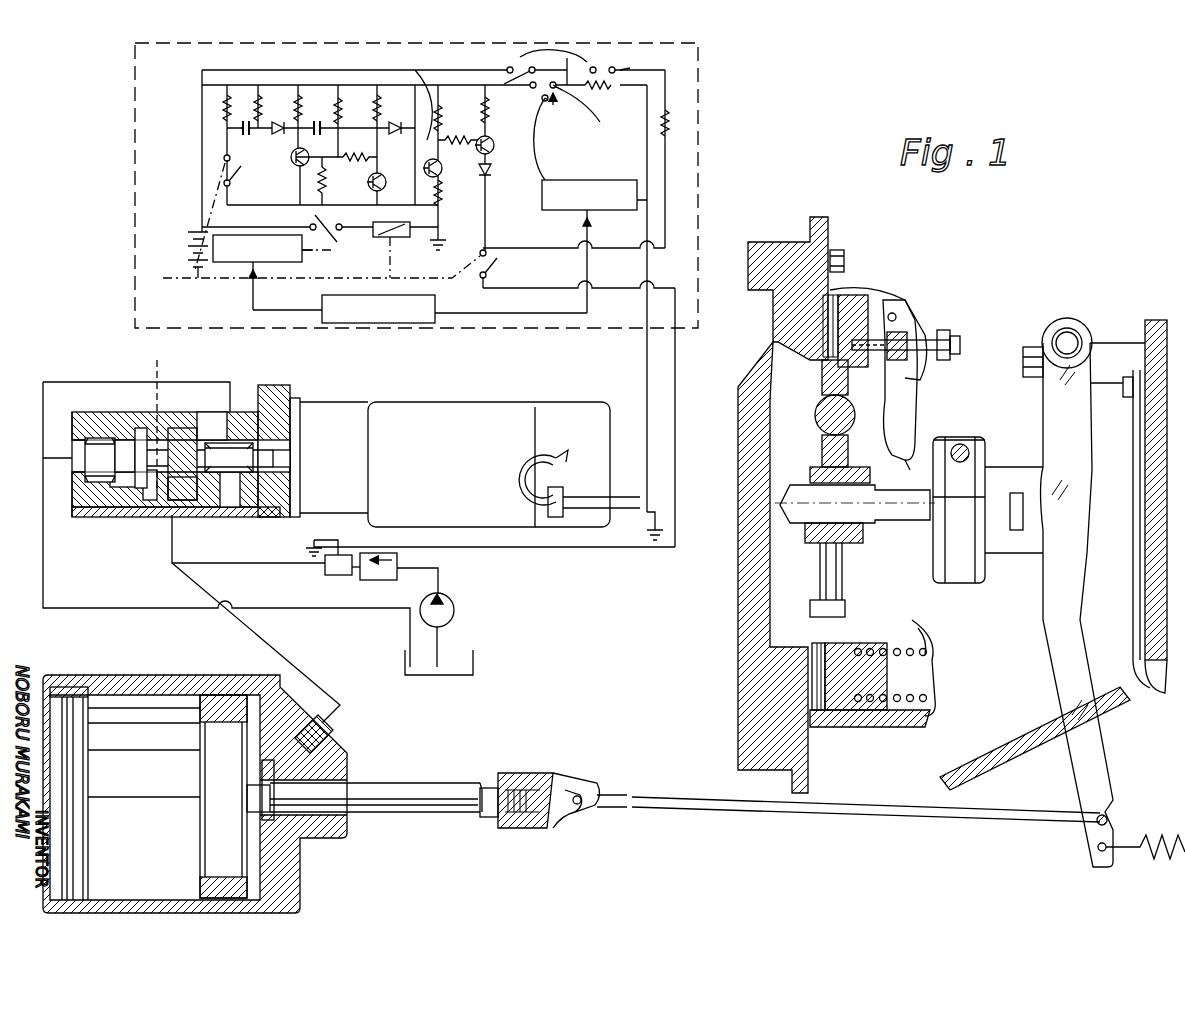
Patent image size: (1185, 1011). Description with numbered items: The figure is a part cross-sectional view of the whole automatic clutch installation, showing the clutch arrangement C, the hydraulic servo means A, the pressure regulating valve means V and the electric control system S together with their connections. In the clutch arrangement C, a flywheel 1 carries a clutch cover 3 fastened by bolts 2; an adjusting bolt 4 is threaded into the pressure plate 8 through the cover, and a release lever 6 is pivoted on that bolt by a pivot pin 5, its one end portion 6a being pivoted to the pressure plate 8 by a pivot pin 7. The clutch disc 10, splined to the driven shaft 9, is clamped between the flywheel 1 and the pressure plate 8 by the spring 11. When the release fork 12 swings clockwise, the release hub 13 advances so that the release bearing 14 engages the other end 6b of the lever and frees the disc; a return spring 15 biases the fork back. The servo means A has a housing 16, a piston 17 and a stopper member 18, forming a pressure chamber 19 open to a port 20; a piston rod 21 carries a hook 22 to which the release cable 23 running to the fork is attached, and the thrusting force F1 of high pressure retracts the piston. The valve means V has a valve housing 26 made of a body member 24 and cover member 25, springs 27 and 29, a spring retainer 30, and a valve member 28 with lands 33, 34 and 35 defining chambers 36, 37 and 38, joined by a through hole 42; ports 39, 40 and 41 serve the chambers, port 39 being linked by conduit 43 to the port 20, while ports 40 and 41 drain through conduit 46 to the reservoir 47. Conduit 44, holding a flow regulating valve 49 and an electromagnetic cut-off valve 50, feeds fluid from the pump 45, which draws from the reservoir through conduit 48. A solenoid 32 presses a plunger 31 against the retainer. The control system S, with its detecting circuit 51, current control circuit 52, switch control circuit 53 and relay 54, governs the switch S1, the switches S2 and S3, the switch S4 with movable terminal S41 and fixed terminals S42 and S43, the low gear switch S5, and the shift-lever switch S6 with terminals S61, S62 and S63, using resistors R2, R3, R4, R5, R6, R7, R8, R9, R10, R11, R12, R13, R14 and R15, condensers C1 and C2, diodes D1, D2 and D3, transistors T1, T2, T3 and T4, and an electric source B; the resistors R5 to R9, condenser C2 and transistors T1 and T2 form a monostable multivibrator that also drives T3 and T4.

The flywheel 1 is at (790, 240).
The bolts 2 is at (843, 258).
The clutch cover 3 is at (876, 292).
The adjusting bolt 4 is at (951, 341).
The pivot pin 5 is at (890, 362).
The release lever 6 is at (905, 418).
The one end portion of release lever 6a is at (900, 310).
The other end of release lever 6b is at (908, 462).
The pivot pin 7 is at (928, 337).
The pressure plate 8 is at (852, 296).
The driven shaft 9 is at (893, 508).
The clutch disc 10 is at (850, 545).
The spring 11 is at (882, 648).
The release fork 12 is at (1048, 608).
The release hub 13 is at (1003, 548).
The release bearing 14 is at (960, 444).
The return spring 15 is at (1150, 836).
The housing 16 is at (133, 678).
The piston 17 is at (218, 698).
The stopper member 18 is at (68, 690).
The pressure chamber 19 is at (308, 712).
The port 20 is at (330, 735).
The piston rod 21 is at (398, 790).
The hook 22 is at (520, 775).
The release wire or cable 23 is at (873, 810).
The body member 24 is at (92, 418).
The cover member 25 is at (96, 515).
The valve housing 26 is at (70, 425).
The spring 27 is at (85, 478).
The valve member 28 is at (180, 430).
The spring 29 is at (290, 470).
The spring retainer 30 is at (268, 512).
The plunger 31 is at (292, 455).
The solenoid 32 is at (438, 412).
The small diameter land 33 is at (118, 470).
The large diameter land 34 is at (150, 470).
The large diameter land 35 is at (222, 512).
The chamber 36 is at (130, 500).
The chamber 37 is at (178, 488).
The chamber 38 is at (240, 512).
The port 39 is at (170, 510).
The port 40 is at (210, 418).
The port 41 is at (238, 420).
The through hole 42 is at (160, 416).
The conduit 43 is at (262, 638).
The conduit 44 is at (267, 566).
The hydraulic pump 45 is at (452, 604).
The conduit 46 is at (122, 382).
The reservoir 47 is at (474, 665).
The conduit 48 is at (440, 642).
The flow regulating valve 49 is at (380, 580).
The electromagnetic cut-off valve 50 is at (338, 575).
The detecting circuit 51 is at (436, 307).
The current control circuit 52 is at (600, 212).
The switch control circuit 53 is at (232, 260).
The relay 54 is at (384, 240).
The hydraulic servo means A is at (327, 840).
The electric source B is at (188, 247).
The clutch arrangement C is at (927, 262).
The automatic electric control system S is at (133, 186).
The hydraulic pressure regulating valve means V is at (318, 400).
The thrusting force F1 is at (175, 789).
The fixed resistor R2 is at (600, 93).
The fixed resistor R3 is at (238, 108).
The fixed resistor R4 is at (269, 108).
The fixed resistor R5 is at (309, 108).
The fixed resistor R6 is at (348, 122).
The fixed resistor R7 is at (388, 108).
The fixed resistor R8 is at (355, 179).
The fixed resistor R9 is at (312, 181).
The fixed resistor R10 is at (407, 96).
The fixed resistor R11 is at (455, 208).
The fixed resistor R12 is at (461, 158).
The fixed resistor R13 is at (458, 119).
The fixed resistor R14 is at (471, 106).
The fixed resistor R15 is at (668, 127).
The condenser C1 is at (253, 143).
The condenser C2 is at (324, 141).
The diode D1 is at (280, 145).
The diode D2 is at (391, 144).
The diode D3 is at (489, 178).
The transistor T1 is at (311, 188).
The transistor T2 is at (388, 184).
The transistor T3 is at (448, 183).
The transistor T4 is at (498, 148).
The switch S1 is at (337, 234).
The switch S2 is at (246, 176).
The switch S3 is at (494, 266).
The switch S4 is at (554, 132).
The movable terminal S41 is at (572, 109).
The fixed terminal S42 is at (592, 116).
The fixed terminal S43 is at (563, 137).
The low gear switch S5 is at (628, 70).
The shift-lever switch S6 is at (505, 62).
The movable terminal S61 is at (531, 90).
The fixed terminal S62 is at (541, 100).
The fixed terminal S63 is at (567, 60).